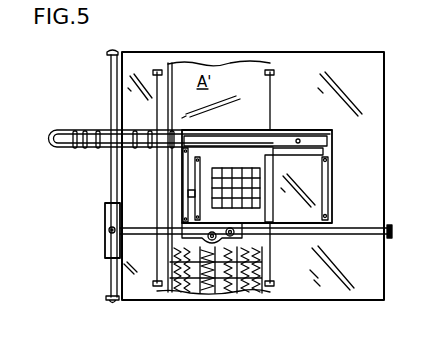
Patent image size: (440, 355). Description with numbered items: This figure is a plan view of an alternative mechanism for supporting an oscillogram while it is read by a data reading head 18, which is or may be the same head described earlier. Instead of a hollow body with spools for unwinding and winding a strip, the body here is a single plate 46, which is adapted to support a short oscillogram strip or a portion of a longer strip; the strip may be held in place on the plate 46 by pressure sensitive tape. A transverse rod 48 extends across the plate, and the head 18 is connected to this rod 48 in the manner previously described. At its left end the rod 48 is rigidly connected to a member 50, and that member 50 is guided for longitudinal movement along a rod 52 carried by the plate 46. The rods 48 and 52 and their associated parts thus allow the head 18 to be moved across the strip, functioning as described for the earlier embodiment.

The head 18 is at (288, 127).
The plate 46 is at (383, 120).
The transverse rod 48 is at (372, 228).
The member 50 is at (106, 239).
The rod 52 is at (110, 95).